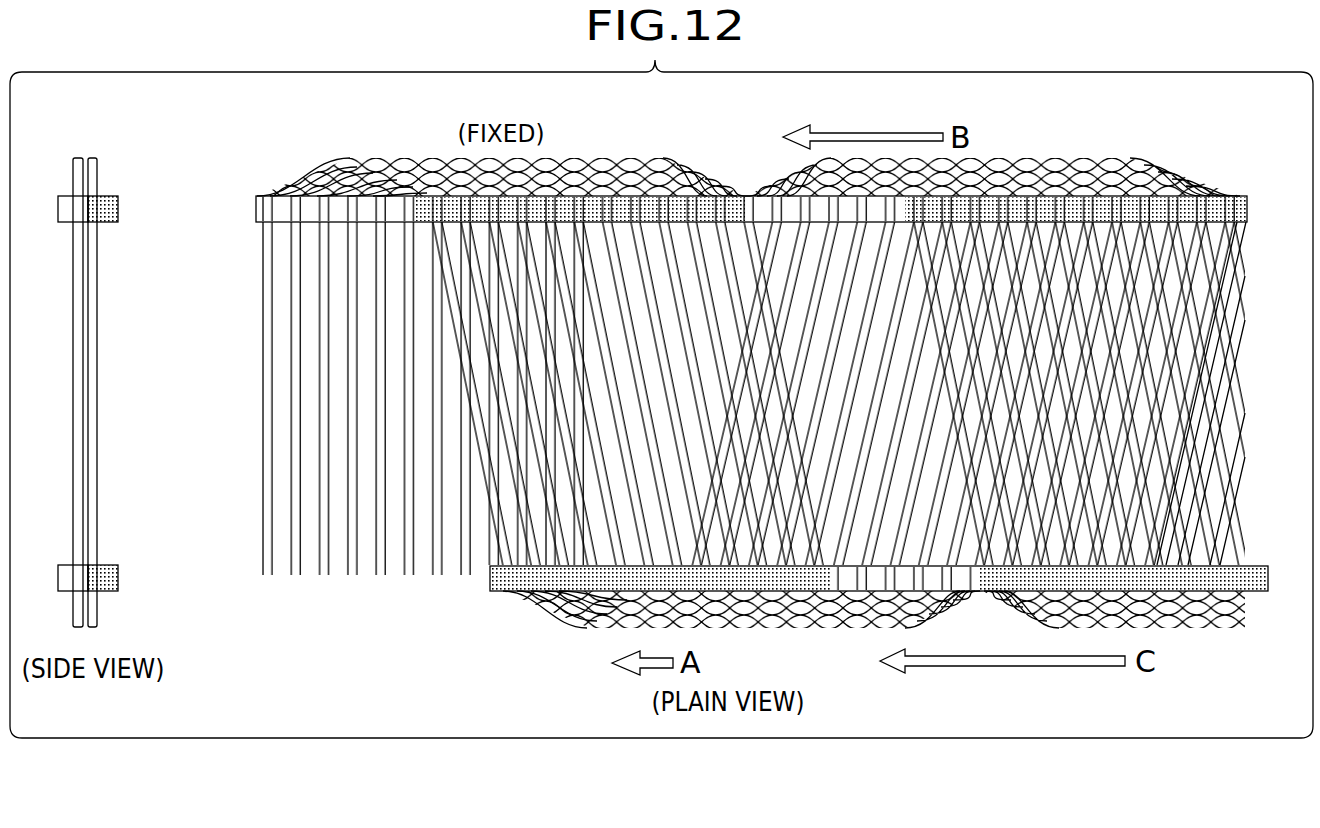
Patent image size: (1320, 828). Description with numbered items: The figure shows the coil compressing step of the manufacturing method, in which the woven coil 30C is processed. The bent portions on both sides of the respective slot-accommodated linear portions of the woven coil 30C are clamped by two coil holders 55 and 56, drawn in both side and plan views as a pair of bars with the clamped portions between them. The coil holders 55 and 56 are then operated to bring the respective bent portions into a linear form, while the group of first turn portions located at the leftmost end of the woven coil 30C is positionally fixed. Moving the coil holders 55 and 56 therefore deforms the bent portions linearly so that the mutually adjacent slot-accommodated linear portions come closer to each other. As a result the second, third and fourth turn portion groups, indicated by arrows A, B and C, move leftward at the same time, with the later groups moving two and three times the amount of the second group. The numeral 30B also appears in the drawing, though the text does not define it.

The coil holder 55 is at (66, 217).
The coil holder 56 is at (393, 212).
The straight fiber portion 30B is at (263, 573).
The woven coil 30C is at (1252, 378).